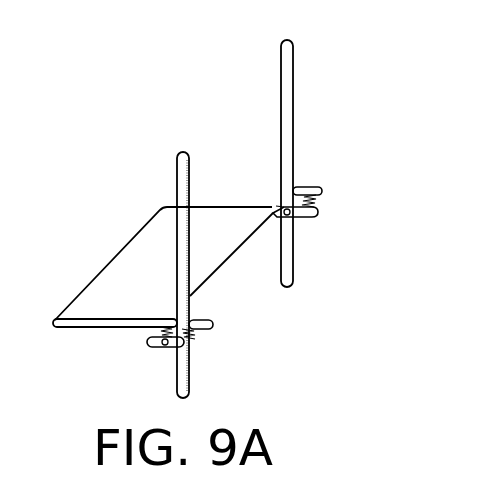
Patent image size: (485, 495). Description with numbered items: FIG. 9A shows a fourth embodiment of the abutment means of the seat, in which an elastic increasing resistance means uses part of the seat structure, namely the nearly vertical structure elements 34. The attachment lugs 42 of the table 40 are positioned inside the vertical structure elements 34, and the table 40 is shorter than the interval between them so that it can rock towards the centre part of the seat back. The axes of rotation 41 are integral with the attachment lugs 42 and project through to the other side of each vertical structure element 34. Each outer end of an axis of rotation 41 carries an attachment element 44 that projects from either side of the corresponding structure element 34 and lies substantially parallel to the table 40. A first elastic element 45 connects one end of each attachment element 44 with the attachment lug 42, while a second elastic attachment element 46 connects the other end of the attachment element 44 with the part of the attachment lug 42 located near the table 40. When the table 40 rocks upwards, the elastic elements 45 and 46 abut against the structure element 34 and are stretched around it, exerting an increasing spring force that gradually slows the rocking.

The vertical structure element 34 is at (288, 112).
The table 40 is at (108, 275).
The axis of rotation 41 is at (290, 218).
The attachment lug 42 is at (276, 218).
The attachment element 44 is at (155, 348).
The first elastic element 45 is at (320, 200).
The second elastic attachment element 46 is at (280, 205).